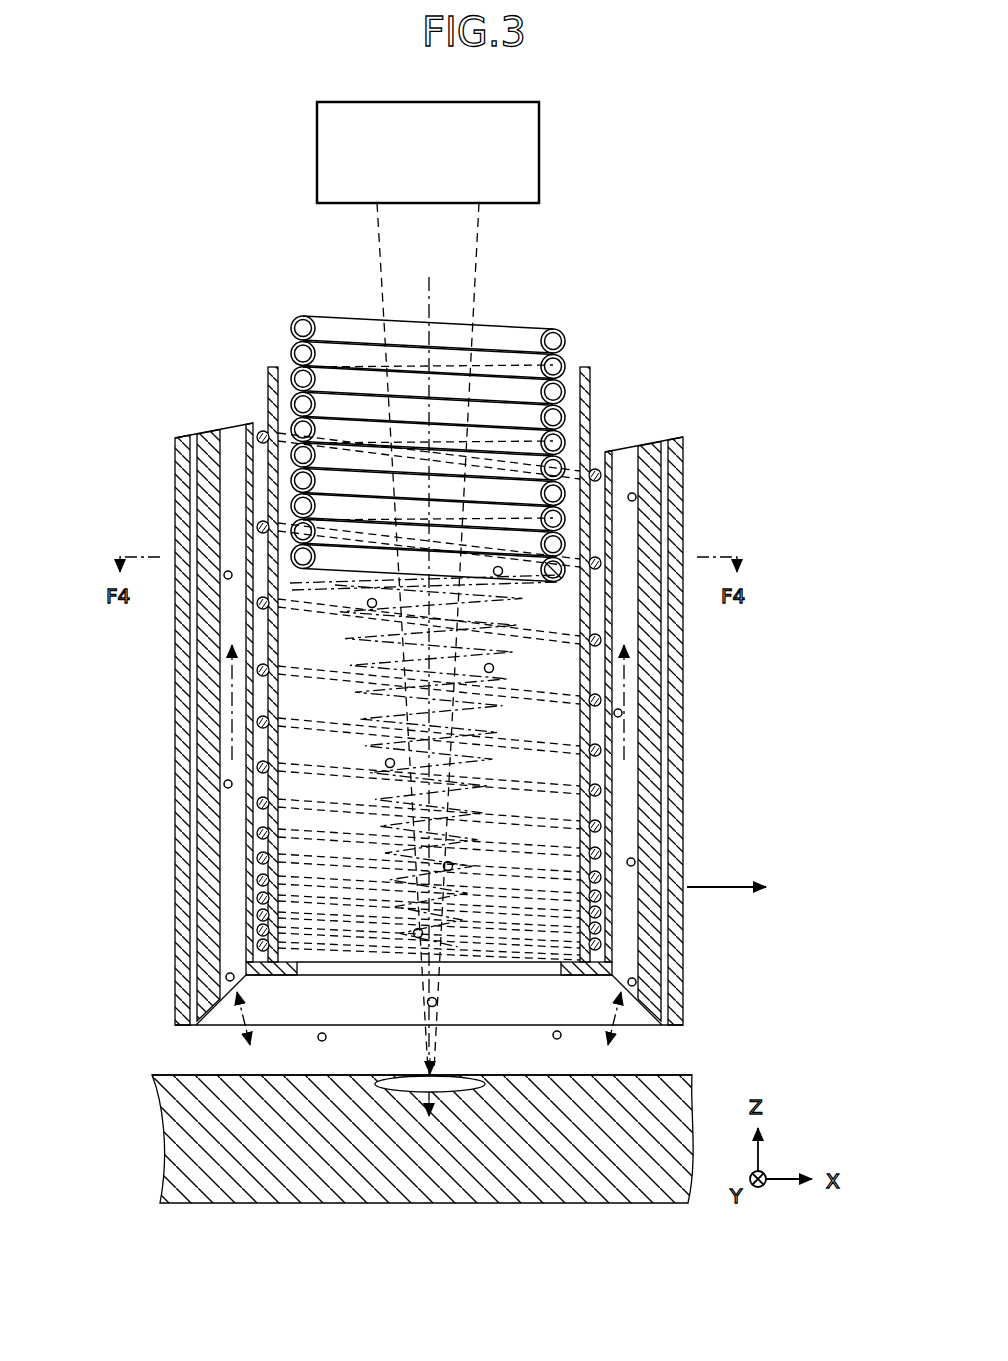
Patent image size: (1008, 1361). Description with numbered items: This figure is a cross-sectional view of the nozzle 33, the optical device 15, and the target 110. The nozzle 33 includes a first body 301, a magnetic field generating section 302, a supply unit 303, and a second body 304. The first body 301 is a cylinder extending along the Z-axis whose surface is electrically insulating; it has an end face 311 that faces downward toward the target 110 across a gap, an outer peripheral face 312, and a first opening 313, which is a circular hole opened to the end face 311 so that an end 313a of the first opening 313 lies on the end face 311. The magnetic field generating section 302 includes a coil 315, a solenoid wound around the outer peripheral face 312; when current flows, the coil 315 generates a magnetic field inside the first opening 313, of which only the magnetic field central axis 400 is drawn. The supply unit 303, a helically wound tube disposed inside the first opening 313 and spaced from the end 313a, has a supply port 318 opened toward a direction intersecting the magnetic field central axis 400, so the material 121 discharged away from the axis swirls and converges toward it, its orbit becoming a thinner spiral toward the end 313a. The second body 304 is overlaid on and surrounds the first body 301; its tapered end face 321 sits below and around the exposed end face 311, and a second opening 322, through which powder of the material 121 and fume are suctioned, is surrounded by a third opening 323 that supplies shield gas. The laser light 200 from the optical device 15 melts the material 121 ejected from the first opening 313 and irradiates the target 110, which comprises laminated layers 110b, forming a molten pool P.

The optical device 15 is at (539, 142).
The laser light 200 is at (480, 238).
The magnetic field central axis 400 is at (430, 293).
The nozzle 33 is at (158, 397).
The first body 301 is at (268, 375).
The magnetic field generating section 302 is at (258, 430).
The supply unit 303 is at (565, 335).
The second body 304 is at (668, 456).
The outer peripheral face 312 is at (589, 380).
The first opening 313 is at (577, 426).
The end of the first opening 313a is at (352, 968).
The coil 315 is at (608, 478).
The supply port 318 is at (566, 553).
The end face 321 is at (207, 1030).
The second opening 322 is at (228, 800).
The third opening 323 is at (190, 860).
The end face 311 is at (572, 977).
The material 121 is at (636, 497).
The target 110 is at (644, 1074).
The layer 110b is at (283, 1093).
The molten pool P is at (448, 1092).